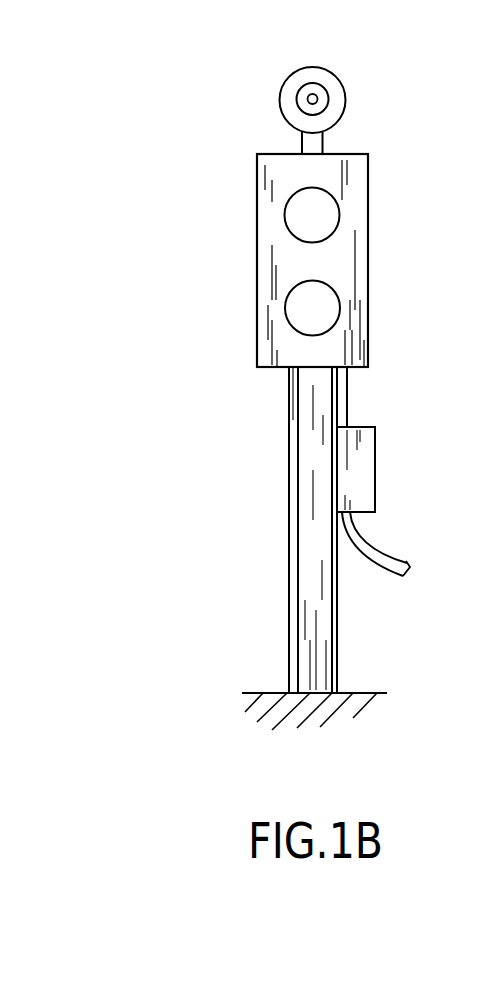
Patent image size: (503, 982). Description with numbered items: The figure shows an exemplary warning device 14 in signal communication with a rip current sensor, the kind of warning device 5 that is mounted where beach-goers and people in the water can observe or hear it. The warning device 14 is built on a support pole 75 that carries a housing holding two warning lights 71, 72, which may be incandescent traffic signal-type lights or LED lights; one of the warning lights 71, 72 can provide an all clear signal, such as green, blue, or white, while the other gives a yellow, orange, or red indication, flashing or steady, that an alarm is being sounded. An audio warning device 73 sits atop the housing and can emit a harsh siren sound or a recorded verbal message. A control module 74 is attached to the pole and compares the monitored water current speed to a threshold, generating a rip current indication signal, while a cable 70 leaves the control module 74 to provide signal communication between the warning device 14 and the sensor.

The warning device 5 is at (415, 211).
The warning device 14 is at (370, 278).
The cable 70 is at (377, 542).
The warning light 71 is at (285, 218).
The warning light 72 is at (285, 318).
The audio warning device 73 is at (327, 68).
The control module 74 is at (363, 470).
The pole 75 is at (303, 572).